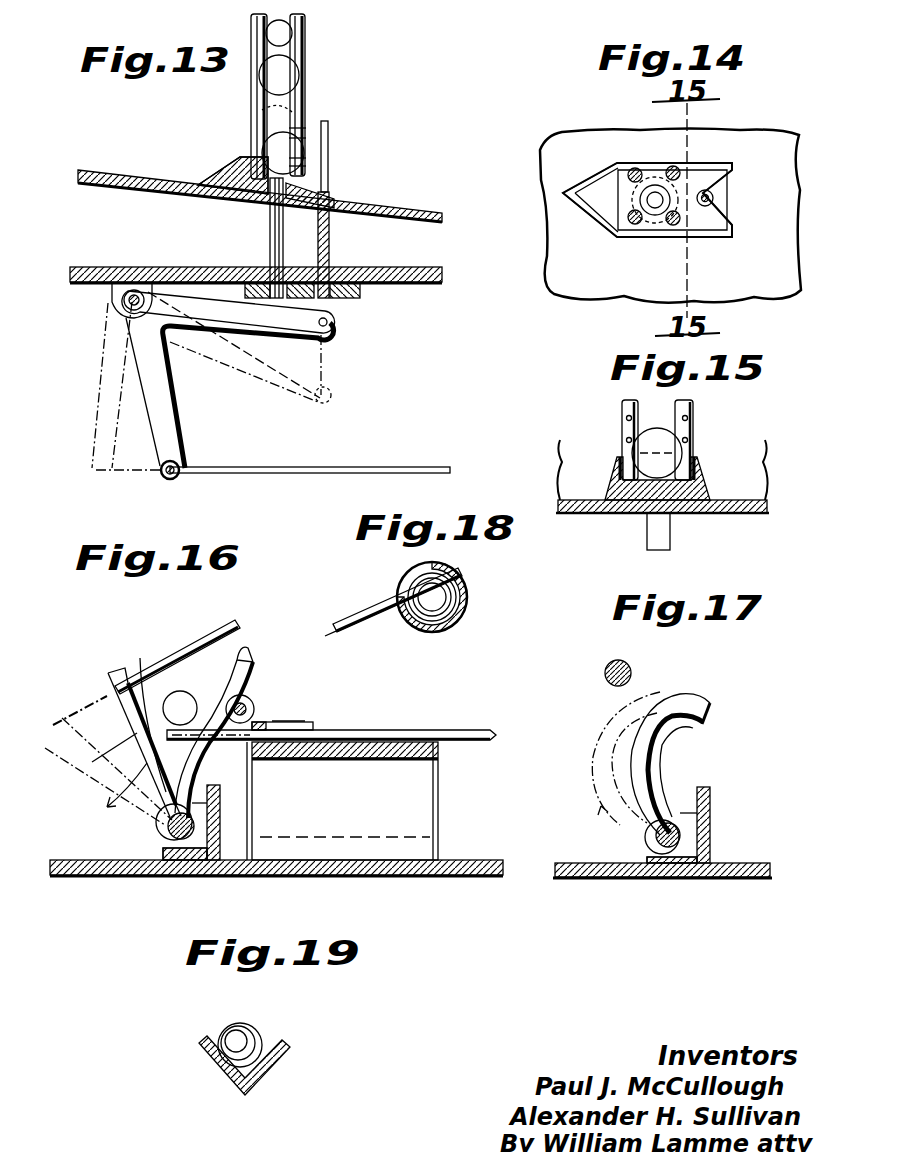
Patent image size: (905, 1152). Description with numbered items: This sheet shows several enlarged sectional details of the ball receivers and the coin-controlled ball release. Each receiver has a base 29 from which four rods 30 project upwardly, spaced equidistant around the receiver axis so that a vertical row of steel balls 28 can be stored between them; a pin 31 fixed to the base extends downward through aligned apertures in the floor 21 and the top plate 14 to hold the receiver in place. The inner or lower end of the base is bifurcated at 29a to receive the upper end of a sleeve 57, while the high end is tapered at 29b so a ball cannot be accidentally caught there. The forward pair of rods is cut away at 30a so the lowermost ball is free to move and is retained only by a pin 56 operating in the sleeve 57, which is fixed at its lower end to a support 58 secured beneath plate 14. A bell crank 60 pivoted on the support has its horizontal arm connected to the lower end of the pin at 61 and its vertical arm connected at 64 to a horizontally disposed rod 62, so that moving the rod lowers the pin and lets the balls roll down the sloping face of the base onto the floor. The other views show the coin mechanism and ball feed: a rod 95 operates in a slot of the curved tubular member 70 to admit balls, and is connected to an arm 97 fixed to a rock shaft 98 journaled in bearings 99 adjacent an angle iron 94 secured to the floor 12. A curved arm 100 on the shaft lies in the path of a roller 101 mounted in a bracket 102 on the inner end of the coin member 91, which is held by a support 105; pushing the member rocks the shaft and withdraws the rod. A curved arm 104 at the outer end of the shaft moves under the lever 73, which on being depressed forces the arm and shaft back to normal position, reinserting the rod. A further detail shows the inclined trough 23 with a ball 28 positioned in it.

In FIG. 16, the floor 12 is at (468, 880).
In FIG. 17, the floor 12 is at (612, 880).
In FIG. 13, the top plate 14 is at (250, 134).
In FIG. 13, the floor 21 is at (102, 170).
In FIG. 14, the floor 21 is at (574, 140).
In FIG. 15, the floor 21 is at (570, 470).
In FIG. 19, the trough 23 is at (224, 1065).
In FIG. 13, the steel ball 28 is at (282, 36).
In FIG. 15, the steel ball 28 is at (657, 453).
In FIG. 18, the steel ball 28 is at (424, 632).
In FIG. 19, the steel ball 28 is at (254, 1035).
In FIG. 13, the base 29 is at (200, 182).
In FIG. 14, the base 29 is at (612, 222).
In FIG. 15, the base 29 is at (628, 500).
In FIG. 13, the bifurcated end of base 29a is at (318, 203).
In FIG. 14, the bifurcated end of base 29a is at (724, 191).
In FIG. 13, the tapered end of base 29b is at (207, 171).
In FIG. 14, the tapered end of base 29b is at (580, 191).
In FIG. 13, the rods 30 is at (251, 93).
In FIG. 14, the rods 30 is at (668, 167).
In FIG. 15, the rods 30 is at (625, 410).
In FIG. 13, the cut-away portion of rods 30a is at (300, 142).
In FIG. 15, the cut-away portion of rods 30a is at (628, 440).
In FIG. 13, the pin 31 is at (270, 238).
In FIG. 15, the pin 31 is at (672, 537).
In FIG. 13, the pin 56 is at (304, 148).
In FIG. 14, the pin 56 is at (708, 200).
In FIG. 13, the sleeve 57 is at (330, 241).
In FIG. 14, the sleeve 57 is at (713, 207).
In FIG. 13, the support 58 is at (124, 293).
In FIG. 13, the bell crank 60 is at (245, 320).
In FIG. 13, the connection of bell crank arm to pin 61 is at (338, 325).
In FIG. 13, the horizontally disposed rod 62 is at (365, 468).
In FIG. 13, the connection of bell crank to rod 64 is at (182, 462).
In FIG. 18, the tubular member 70 is at (457, 628).
In FIG. 17, the lever 73 is at (632, 668).
In FIG. 16, the member 91 is at (478, 732).
In FIG. 16, the angle iron 94 is at (220, 848).
In FIG. 17, the angle iron 94 is at (712, 812).
In FIG. 16, the rod 95 is at (197, 645).
In FIG. 18, the rod 95 is at (393, 610).
In FIG. 16, the arm 97 is at (92, 758).
In FIG. 16, the rock shaft 98 is at (170, 861).
In FIG. 17, the rock shaft 98 is at (675, 870).
In FIG. 16, the bearings 99 is at (163, 832).
In FIG. 17, the bearings 99 is at (648, 843).
In FIG. 16, the curved arm 100 is at (253, 660).
In FIG. 16, the roller 101 is at (250, 700).
In FIG. 16, the bracket 102 is at (292, 722).
In FIG. 17, the curved arm 104 is at (680, 742).
In FIG. 16, the support 105 is at (342, 801).